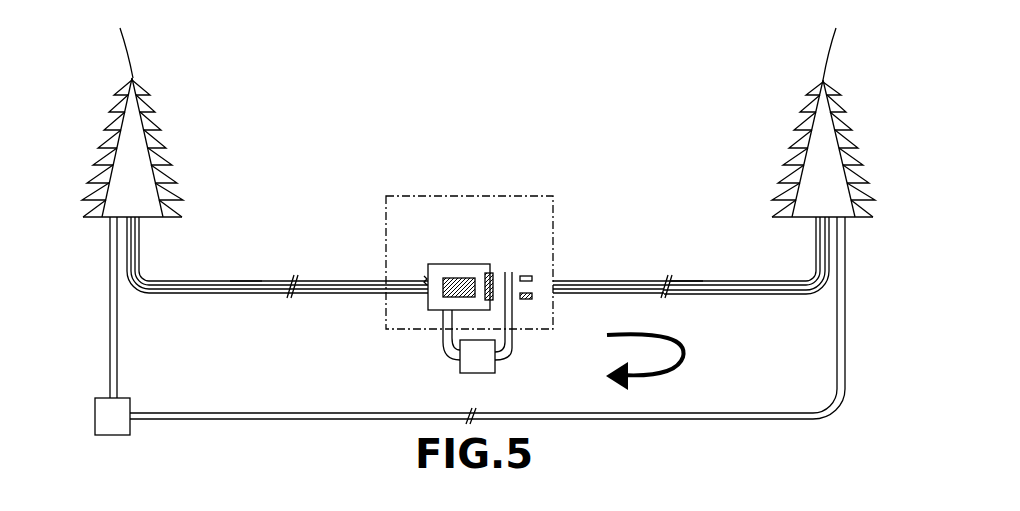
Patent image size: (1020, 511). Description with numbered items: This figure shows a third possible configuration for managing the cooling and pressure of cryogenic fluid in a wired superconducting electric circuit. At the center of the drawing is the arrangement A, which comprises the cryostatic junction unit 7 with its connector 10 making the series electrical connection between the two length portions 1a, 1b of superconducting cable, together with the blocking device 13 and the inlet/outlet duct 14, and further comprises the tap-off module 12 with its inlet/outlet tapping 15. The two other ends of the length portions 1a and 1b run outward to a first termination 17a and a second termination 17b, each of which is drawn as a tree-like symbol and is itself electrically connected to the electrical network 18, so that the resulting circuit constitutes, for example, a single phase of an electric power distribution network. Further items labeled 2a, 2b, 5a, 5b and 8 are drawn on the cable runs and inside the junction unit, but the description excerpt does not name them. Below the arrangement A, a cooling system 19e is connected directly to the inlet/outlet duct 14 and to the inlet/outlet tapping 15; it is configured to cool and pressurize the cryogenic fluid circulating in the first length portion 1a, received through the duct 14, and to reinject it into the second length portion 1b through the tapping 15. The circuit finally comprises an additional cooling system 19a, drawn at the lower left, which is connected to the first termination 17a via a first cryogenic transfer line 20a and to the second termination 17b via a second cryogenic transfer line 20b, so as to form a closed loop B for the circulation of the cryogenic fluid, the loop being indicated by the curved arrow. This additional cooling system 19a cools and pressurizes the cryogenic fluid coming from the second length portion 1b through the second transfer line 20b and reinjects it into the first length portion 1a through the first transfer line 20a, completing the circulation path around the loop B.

The first length portion of superconducting cable 1a is at (197, 302).
The second length portion of superconducting cable 1b is at (752, 302).
The first cable sheath 2a is at (268, 289).
The second cable sheath 2b is at (708, 281).
The first cable core 5a is at (250, 281).
The second cable core 5b is at (692, 281).
The cryostatic junction unit 7 is at (418, 250).
The first connector element 8 is at (441, 277).
The connector 10 is at (460, 278).
The tap-off module 12 is at (512, 276).
The blocking device 13 is at (489, 273).
The inlet/outlet duct 14 is at (443, 338).
The inlet/outlet tapping 15 is at (512, 340).
The first termination 17a is at (115, 180).
The second termination 17b is at (840, 178).
The electrical network 18 is at (130, 52).
The additional cooling system 19a is at (105, 418).
The cooling system 19e is at (478, 364).
The first cryogenic transfer line 20a is at (110, 340).
The second cryogenic transfer line 20b is at (845, 338).
The arrangement A is at (409, 190).
The closed loop B is at (646, 372).